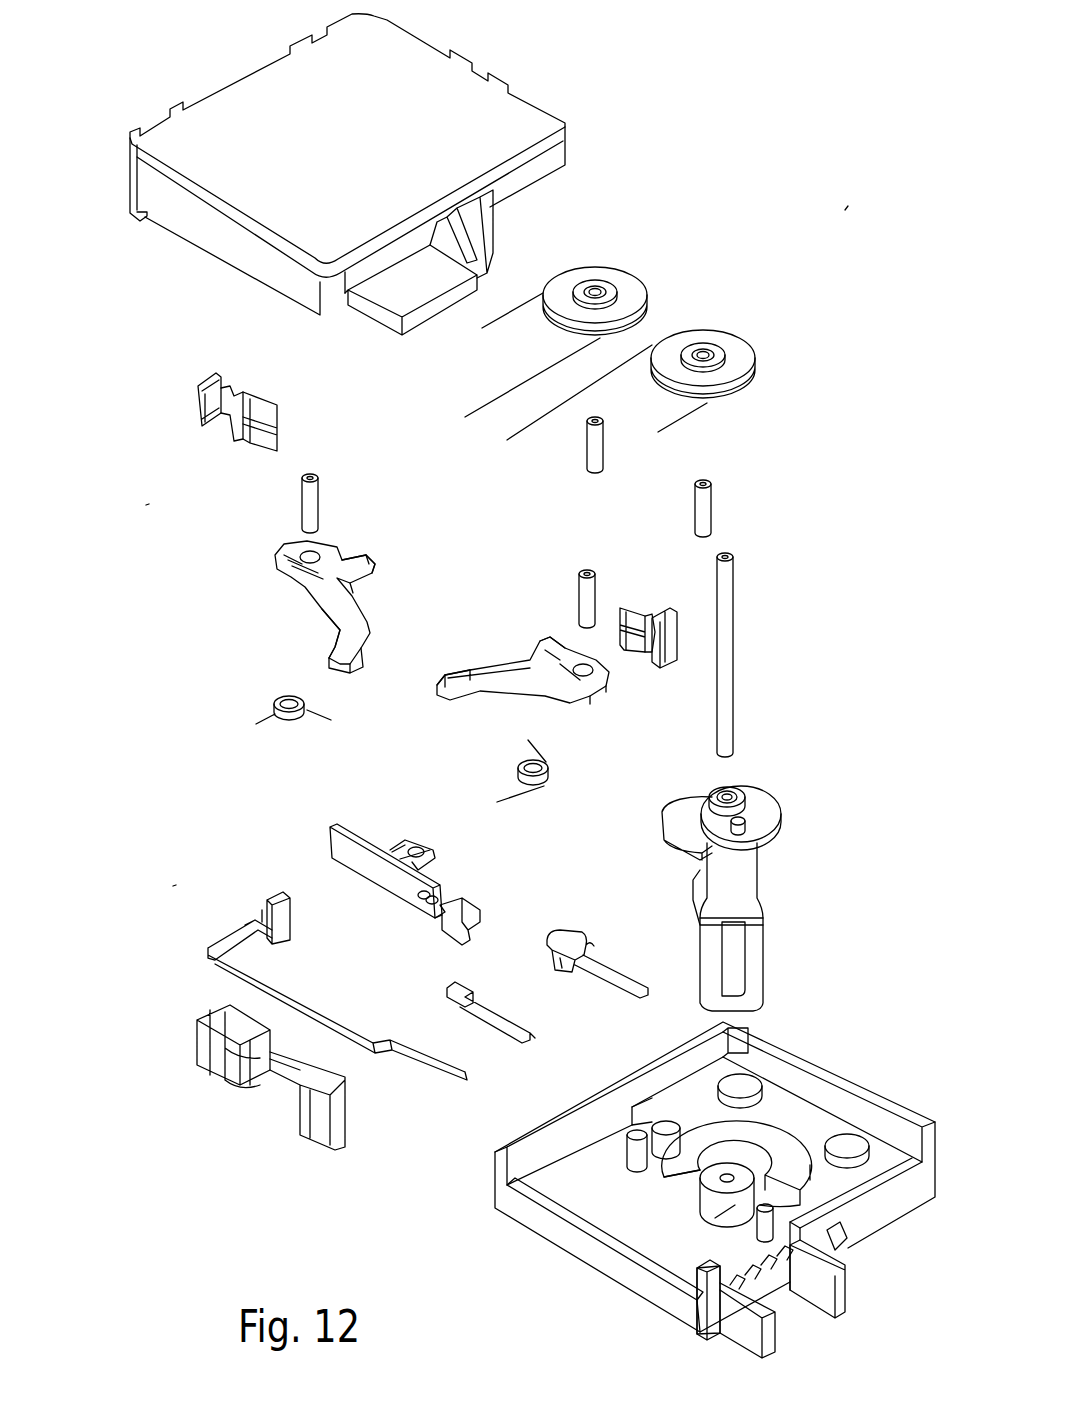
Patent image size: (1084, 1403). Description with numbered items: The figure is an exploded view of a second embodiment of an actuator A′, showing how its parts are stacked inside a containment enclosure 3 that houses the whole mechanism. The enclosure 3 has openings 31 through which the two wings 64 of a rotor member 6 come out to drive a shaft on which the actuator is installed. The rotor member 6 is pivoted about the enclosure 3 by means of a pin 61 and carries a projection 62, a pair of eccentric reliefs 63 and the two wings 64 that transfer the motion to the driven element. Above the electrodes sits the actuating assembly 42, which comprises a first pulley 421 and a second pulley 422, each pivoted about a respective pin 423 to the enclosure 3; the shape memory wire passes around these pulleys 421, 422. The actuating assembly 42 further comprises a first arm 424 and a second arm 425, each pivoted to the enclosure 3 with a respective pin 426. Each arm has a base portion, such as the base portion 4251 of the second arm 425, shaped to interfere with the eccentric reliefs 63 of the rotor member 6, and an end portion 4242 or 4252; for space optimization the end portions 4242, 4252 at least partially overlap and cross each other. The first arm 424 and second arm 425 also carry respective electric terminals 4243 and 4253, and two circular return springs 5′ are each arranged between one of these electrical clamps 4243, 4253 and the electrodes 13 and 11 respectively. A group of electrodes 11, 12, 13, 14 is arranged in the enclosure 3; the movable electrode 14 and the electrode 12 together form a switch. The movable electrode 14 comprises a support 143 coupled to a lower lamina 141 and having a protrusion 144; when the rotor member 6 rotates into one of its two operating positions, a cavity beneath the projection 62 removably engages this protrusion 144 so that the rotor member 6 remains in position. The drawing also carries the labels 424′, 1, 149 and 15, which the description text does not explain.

The containment enclosure 3 is at (403, 50).
The actuator A′ is at (856, 204).
The first pulley 421 is at (623, 280).
The second pulley 422 is at (743, 367).
The pins 423 is at (708, 503).
The electric terminal 4243 is at (203, 407).
The actuating assembly 42 is at (140, 505).
The pin 426 is at (308, 509).
The first arm 424 is at (304, 585).
The lever arm 424′ is at (363, 558).
The end portion 4242 is at (327, 649).
The circular return springs 5′ is at (283, 712).
The second arm 425 is at (573, 703).
The base portion 4251 is at (552, 647).
The end portion 4252 is at (462, 687).
The electric terminal 4253 is at (667, 638).
The pin 61 is at (728, 688).
The rotor member 6 is at (741, 875).
The projection 62 is at (677, 825).
The eccentric reliefs 63 is at (715, 785).
The wings 64 is at (765, 985).
The terminal assembly 1 is at (163, 884).
The movable electrode 14 is at (397, 867).
The lower lamina 141 is at (355, 877).
The support 143 is at (400, 855).
The protrusion 144 is at (423, 843).
The electrode 13 is at (227, 968).
The electrode 12 is at (285, 1078).
The pin 149 is at (503, 1020).
The electrode 11 is at (630, 978).
The openings 31 is at (683, 1172).
The mounting plate 15 is at (810, 1330).